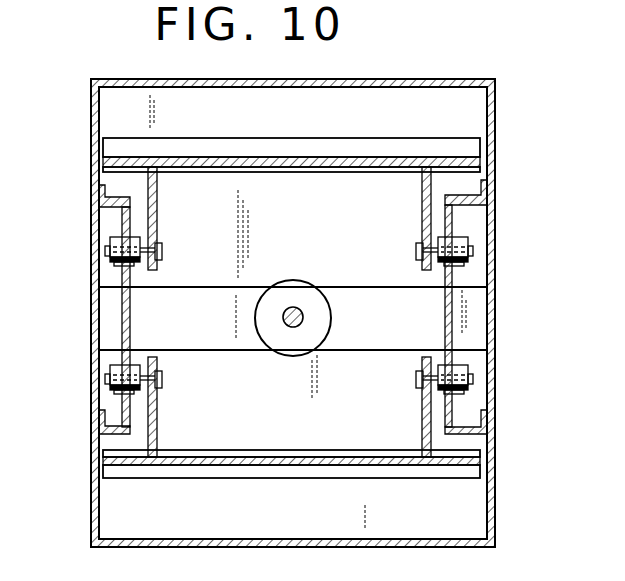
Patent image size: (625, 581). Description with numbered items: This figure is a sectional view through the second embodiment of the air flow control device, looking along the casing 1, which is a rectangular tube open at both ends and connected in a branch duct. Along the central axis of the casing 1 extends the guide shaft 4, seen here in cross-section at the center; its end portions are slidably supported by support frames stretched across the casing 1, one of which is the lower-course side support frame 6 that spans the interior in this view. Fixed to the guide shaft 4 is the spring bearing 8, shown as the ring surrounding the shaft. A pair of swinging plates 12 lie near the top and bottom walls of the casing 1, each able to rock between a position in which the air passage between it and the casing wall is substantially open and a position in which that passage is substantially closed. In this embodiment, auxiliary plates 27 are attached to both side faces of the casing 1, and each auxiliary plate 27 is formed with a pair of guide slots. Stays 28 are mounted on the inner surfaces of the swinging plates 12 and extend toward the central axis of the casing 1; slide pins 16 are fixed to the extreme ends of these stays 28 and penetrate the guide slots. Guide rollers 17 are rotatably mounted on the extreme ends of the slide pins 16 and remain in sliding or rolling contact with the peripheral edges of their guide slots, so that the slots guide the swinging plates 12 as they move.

The casing 1 is at (455, 79).
The swinging plate 12 is at (282, 140).
The support frame 6 is at (348, 300).
The stay 28 is at (158, 218).
The auxiliary plate 27 is at (131, 330).
The guide roller 17 is at (117, 243).
The slide pin 16 is at (163, 250).
The spring bearing 8 is at (290, 285).
The guide shaft 4 is at (297, 328).